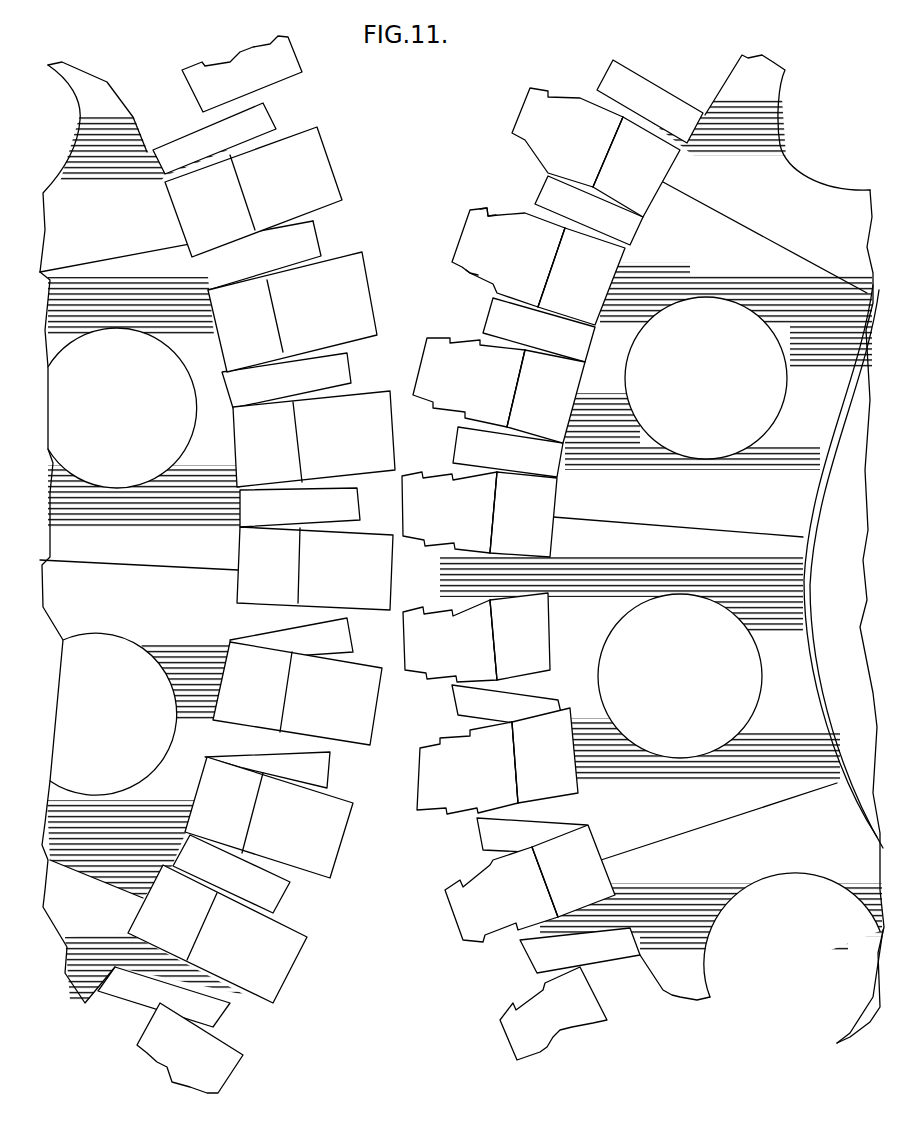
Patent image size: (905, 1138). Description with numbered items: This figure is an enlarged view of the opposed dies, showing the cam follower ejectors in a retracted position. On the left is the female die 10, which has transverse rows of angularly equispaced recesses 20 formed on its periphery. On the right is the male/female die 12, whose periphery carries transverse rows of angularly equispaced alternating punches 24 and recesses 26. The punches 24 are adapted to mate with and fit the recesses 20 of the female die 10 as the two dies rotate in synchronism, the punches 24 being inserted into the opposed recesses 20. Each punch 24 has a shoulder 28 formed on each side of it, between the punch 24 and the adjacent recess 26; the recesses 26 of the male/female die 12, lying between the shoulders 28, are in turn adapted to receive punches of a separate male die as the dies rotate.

The female die 10 is at (90, 70).
The male/female die 12 is at (598, 69).
The recesses 20 is at (388, 374).
The punches 24 is at (455, 235).
The recesses 26 is at (452, 326).
The shoulder 28 is at (487, 212).